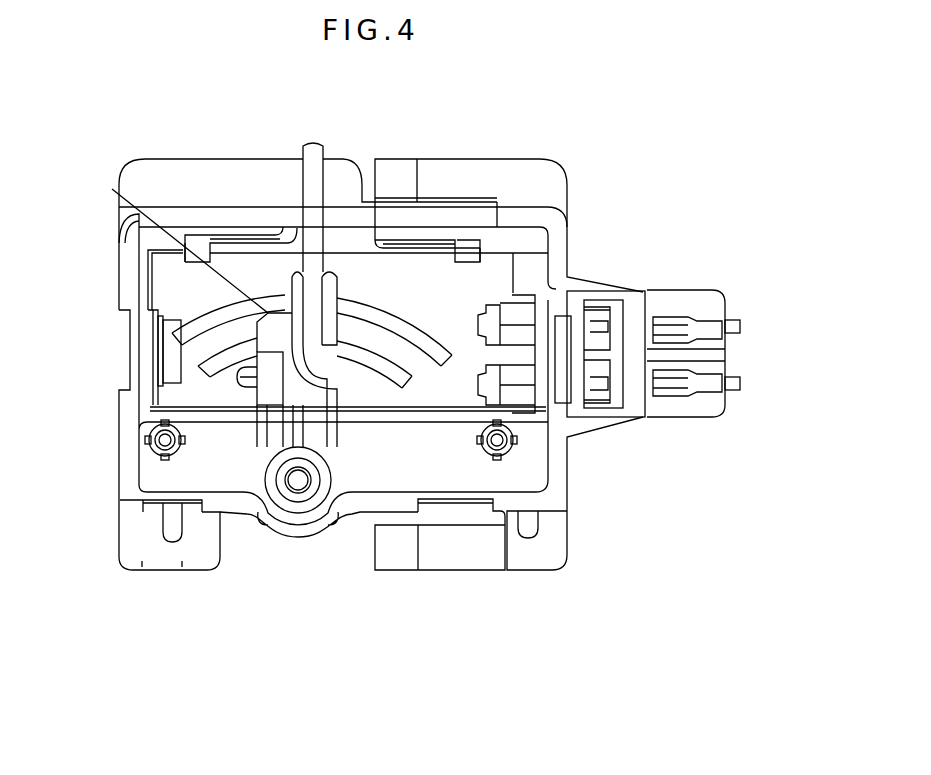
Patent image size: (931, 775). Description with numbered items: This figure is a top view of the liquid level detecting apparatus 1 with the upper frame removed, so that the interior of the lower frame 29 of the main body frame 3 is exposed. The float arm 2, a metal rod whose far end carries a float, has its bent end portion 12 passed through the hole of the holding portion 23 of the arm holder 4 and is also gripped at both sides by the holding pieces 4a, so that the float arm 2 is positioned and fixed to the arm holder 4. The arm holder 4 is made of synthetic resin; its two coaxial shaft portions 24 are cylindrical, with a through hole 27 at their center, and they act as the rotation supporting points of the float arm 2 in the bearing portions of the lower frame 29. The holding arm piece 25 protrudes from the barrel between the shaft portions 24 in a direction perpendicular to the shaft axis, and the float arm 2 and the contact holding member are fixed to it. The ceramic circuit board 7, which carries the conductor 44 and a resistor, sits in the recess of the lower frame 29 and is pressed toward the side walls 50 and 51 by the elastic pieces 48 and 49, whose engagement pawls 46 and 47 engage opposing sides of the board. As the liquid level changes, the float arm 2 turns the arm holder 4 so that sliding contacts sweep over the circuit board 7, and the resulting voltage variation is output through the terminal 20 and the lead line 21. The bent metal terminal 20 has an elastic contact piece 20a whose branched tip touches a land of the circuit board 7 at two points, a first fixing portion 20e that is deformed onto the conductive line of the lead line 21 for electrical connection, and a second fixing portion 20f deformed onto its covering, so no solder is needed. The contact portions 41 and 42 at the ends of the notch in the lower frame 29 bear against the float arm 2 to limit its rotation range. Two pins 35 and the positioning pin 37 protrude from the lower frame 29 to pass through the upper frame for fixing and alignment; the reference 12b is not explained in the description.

The liquid level detecting apparatus 1 is at (584, 191).
The float arm 2 is at (318, 177).
The main body frame 3 is at (222, 240).
The arm holder 4 is at (277, 293).
The holding pieces 4a is at (418, 165).
The circuit board 7 is at (193, 300).
The bent end portion 12 is at (252, 378).
The lever base portion 12b is at (340, 450).
The terminal 20 is at (592, 317).
The contact piece 20a is at (552, 250).
The first fixing portion 20e is at (672, 320).
The second fixing portion 20f is at (710, 320).
The lead line 21 is at (733, 320).
The holding portion 23 is at (267, 395).
The shaft portions 24 is at (247, 527).
The holding arm piece 25 is at (189, 309).
The through hole 27 is at (293, 480).
The lower frame 29 is at (517, 190).
The pins 35 is at (143, 433).
The pin 37 is at (270, 527).
The contact portion 41 is at (120, 216).
The contact portion 42 is at (568, 223).
The conductor 44 is at (407, 330).
The engagement pawl 46 is at (153, 373).
The engagement pawl 47 is at (200, 257).
The elastic piece 48 is at (147, 343).
The elastic piece 49 is at (245, 243).
The side wall 50 is at (517, 323).
The side wall 51 is at (505, 460).